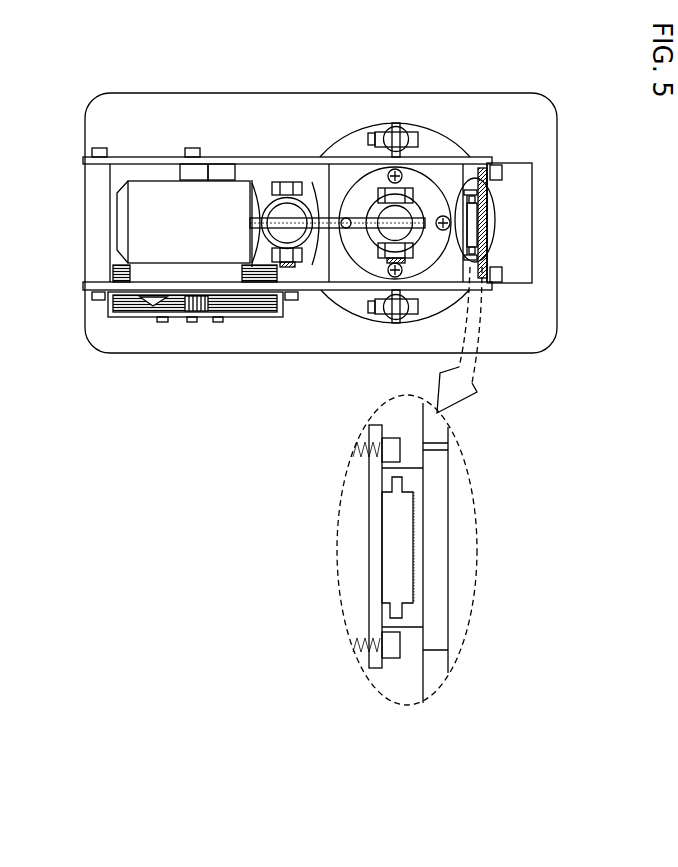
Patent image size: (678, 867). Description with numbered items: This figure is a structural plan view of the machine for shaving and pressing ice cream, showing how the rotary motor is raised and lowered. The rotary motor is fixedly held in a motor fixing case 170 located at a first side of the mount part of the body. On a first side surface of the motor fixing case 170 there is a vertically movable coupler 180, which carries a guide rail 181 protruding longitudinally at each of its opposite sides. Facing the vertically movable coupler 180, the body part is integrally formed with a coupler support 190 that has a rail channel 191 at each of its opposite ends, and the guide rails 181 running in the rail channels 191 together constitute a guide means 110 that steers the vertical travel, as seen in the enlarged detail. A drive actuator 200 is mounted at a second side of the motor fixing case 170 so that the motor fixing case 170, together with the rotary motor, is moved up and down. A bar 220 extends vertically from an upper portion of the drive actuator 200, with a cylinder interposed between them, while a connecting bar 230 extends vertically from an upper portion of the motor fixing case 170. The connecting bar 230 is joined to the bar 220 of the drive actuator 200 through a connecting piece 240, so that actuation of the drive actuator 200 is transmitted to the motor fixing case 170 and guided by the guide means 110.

The drive actuator 200 is at (167, 197).
The bar 220 is at (282, 212).
The connecting piece 240 is at (341, 222).
The motor fixing case 170 is at (442, 175).
The connecting bar 230 is at (385, 232).
The coupler support 190 is at (490, 200).
The vertically movable coupler 180 is at (487, 230).
The guide rail 181 is at (388, 478).
The guide means 110 is at (414, 517).
The rail channel 191 is at (397, 600).